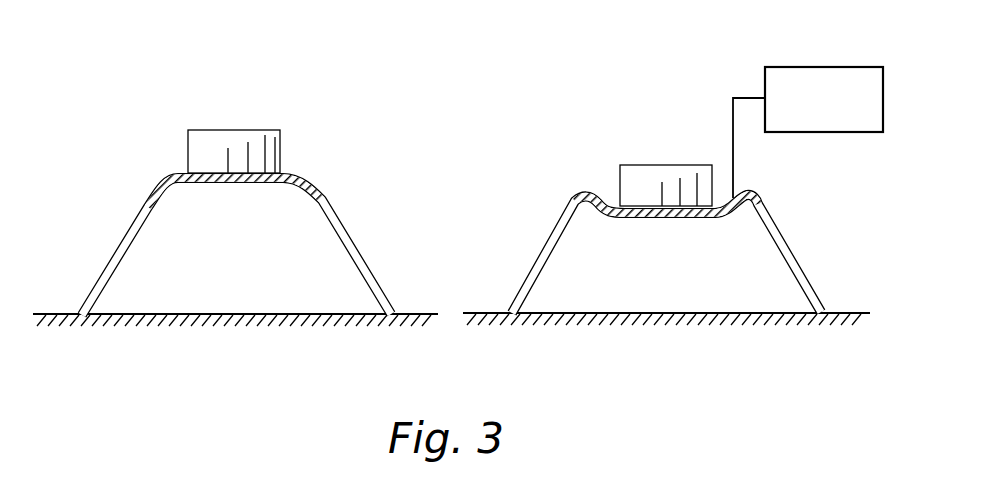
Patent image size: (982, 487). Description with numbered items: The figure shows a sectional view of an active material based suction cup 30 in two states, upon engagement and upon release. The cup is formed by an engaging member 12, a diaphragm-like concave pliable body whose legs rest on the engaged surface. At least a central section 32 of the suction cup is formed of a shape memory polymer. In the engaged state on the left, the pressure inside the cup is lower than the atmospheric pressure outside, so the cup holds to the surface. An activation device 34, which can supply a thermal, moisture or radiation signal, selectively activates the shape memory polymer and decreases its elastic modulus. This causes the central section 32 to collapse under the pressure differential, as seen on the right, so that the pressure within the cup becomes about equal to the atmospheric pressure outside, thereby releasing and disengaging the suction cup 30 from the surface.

The active material based suction cup 30 is at (442, 177).
The engaging member 12 is at (461, 241).
The central section 32 is at (167, 184).
The activation device 34 is at (813, 66).